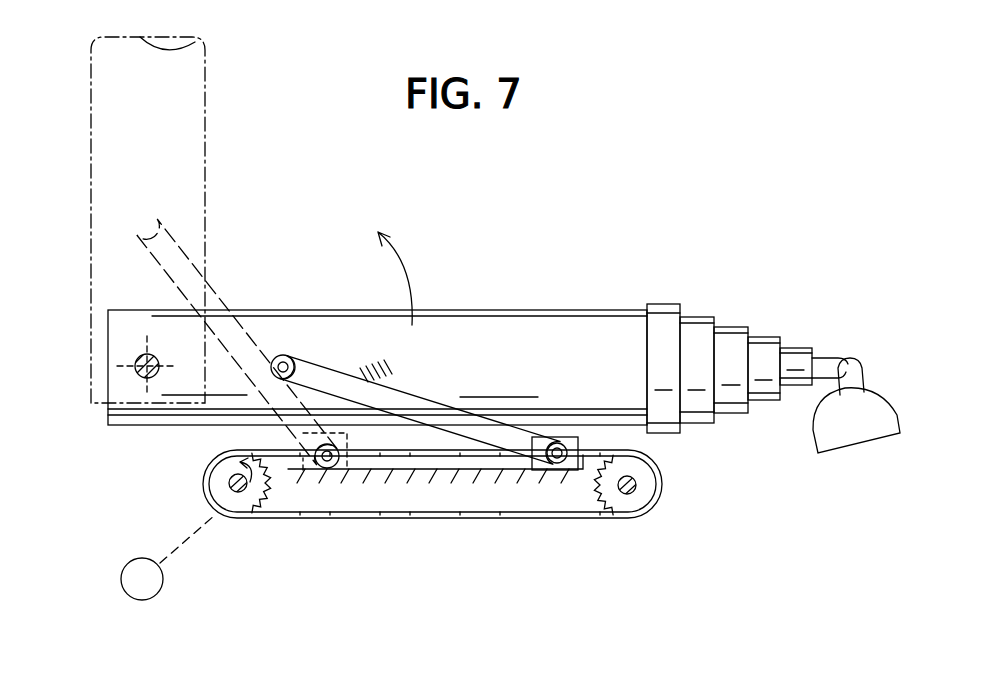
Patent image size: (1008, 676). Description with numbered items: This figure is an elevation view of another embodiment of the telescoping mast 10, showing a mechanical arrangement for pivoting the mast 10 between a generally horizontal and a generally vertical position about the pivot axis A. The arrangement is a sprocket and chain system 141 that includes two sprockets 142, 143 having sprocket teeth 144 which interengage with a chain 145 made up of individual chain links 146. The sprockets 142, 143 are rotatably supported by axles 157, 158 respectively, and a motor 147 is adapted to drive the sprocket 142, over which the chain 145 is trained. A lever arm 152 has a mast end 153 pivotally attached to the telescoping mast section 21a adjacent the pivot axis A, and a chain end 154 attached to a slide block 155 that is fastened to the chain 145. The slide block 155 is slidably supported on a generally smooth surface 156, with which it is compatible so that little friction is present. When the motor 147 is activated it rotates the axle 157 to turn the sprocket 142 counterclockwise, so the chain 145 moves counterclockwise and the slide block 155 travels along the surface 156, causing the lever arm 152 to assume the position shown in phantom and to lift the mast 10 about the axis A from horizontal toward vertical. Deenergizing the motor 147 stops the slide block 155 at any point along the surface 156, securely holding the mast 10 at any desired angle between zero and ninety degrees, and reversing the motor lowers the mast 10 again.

The telescoping mast 10 is at (208, 113).
The telescoping mast section 21a is at (197, 155).
The pivot axis A is at (137, 360).
The sprocket and chain system 141 is at (524, 534).
The sprocket 142 is at (233, 513).
The sprocket 143 is at (640, 500).
The sprocket teeth 144 is at (268, 503).
The chain 145 is at (355, 520).
The chain links 146 is at (483, 455).
The motor 147 is at (157, 597).
The lever arm 152 is at (185, 247).
The mast end 153 is at (283, 355).
The chain end 154 is at (565, 437).
The slide block 155 is at (565, 445).
The smooth surface 156 is at (416, 484).
The axle 157 is at (230, 480).
The axle 158 is at (637, 482).